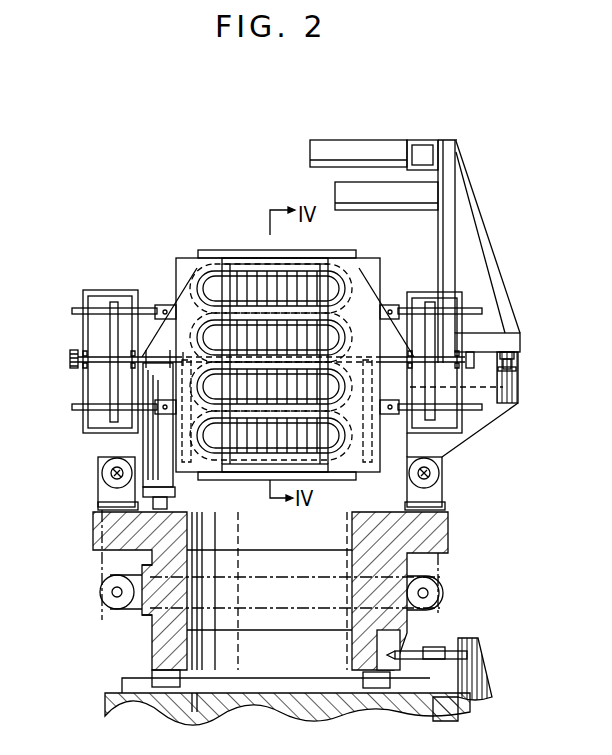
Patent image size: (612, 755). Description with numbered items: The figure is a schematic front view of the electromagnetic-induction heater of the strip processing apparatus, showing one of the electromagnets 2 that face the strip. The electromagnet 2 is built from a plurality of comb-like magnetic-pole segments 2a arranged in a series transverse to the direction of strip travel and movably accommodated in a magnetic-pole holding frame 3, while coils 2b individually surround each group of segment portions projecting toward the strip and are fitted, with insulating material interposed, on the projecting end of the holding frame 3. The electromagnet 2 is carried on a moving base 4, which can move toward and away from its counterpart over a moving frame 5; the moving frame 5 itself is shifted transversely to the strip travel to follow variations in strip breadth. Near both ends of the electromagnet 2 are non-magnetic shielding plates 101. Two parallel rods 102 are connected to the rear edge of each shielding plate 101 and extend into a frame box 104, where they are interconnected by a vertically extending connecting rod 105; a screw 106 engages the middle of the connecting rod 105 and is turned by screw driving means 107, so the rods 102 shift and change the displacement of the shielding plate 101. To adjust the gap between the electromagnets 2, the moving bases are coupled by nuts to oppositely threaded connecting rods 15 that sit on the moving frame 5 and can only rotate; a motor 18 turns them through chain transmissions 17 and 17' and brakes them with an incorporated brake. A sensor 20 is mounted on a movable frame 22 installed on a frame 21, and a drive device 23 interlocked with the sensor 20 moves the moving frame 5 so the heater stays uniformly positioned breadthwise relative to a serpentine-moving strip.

The electromagnet 2 is at (258, 176).
The magnetic-pole segment 2a is at (232, 251).
The coil 2b is at (255, 252).
The magnetic-pole holding frame 3 is at (197, 250).
The moving base 4 is at (147, 447).
The moving frame 5 is at (448, 531).
The connecting rod 15 is at (100, 473).
The chain transmission 17 is at (237, 517).
The chain transmission 17' is at (101, 619).
The motor 18 is at (113, 592).
The sensor 20 is at (360, 192).
The frame 21 is at (512, 408).
The movable frame 22 is at (450, 153).
The drive device 23 is at (447, 652).
The shielding plate 101 is at (176, 283).
The rod 102 is at (97, 308).
The frame box 104 is at (110, 290).
The connecting rod 105 is at (113, 335).
The screw 106 is at (100, 356).
The screw driving means 107 is at (72, 362).